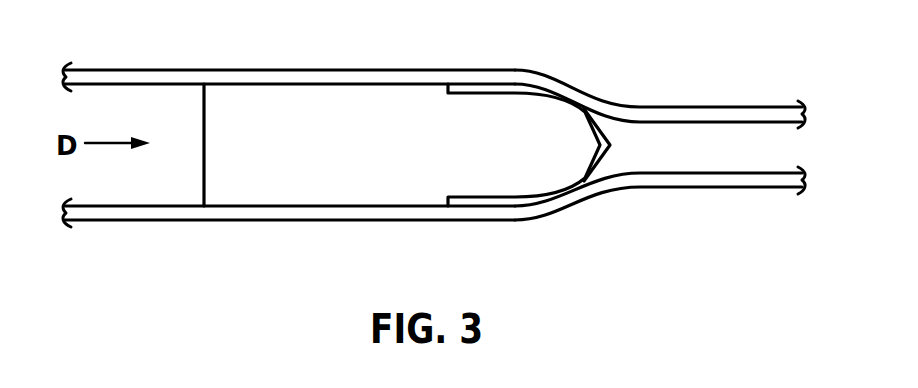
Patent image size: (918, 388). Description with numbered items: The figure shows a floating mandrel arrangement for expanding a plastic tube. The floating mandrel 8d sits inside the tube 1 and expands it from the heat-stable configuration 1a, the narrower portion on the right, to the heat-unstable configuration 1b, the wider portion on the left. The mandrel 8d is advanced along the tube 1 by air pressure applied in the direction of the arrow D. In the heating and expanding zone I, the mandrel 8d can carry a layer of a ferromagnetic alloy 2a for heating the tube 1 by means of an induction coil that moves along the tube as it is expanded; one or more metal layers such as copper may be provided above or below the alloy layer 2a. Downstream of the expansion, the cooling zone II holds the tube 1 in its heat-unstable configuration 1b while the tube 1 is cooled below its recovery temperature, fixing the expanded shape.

The tube 1 is at (738, 98).
The heat-stable configuration 1a is at (735, 185).
The heat-unstable configuration 1b is at (110, 213).
The ferromagnetic alloy layer 2a is at (582, 209).
The floating mandrel 8d is at (285, 190).
The heating and expanding zone I is at (475, 88).
The cooling zone II is at (312, 110).